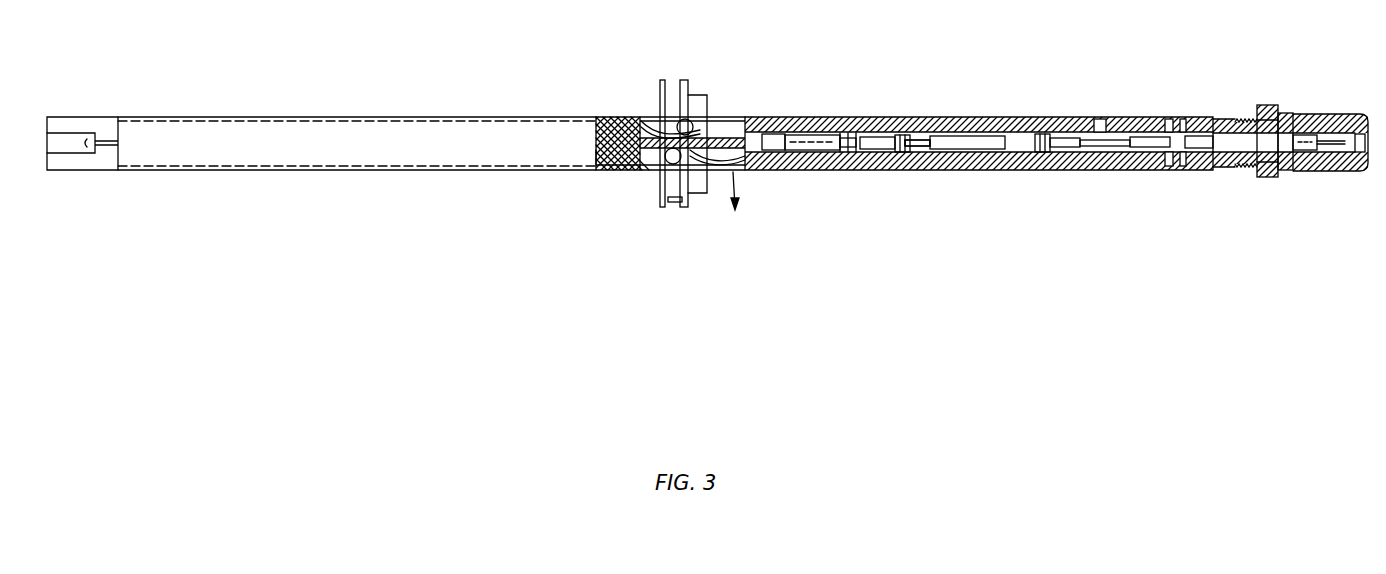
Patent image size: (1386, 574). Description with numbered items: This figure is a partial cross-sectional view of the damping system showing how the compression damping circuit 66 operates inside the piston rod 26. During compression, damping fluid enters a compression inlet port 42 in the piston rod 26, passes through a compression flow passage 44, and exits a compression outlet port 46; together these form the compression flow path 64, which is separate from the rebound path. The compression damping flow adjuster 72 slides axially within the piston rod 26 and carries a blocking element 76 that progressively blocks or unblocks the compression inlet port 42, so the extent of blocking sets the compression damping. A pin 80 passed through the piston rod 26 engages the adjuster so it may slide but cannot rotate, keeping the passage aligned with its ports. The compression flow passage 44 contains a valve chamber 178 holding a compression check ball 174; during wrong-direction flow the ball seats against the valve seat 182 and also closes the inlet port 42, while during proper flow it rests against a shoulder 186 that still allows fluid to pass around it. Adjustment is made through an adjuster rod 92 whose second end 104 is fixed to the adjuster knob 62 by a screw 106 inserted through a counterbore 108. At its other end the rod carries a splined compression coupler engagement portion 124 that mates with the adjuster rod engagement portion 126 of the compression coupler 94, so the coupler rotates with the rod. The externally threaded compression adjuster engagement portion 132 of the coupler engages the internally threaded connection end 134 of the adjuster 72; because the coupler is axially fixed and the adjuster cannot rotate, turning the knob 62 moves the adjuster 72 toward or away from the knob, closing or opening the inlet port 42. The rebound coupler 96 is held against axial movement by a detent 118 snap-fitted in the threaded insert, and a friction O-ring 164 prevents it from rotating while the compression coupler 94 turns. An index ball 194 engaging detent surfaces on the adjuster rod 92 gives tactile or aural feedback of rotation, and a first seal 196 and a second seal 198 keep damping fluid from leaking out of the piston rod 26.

The piston rod 26 is at (307, 117).
The compression inlet port 42 is at (640, 172).
The compression flow passage 44 is at (652, 170).
The compression outlet port 46 is at (735, 176).
The adjuster knob 62 is at (1324, 117).
The compression flow path 64 is at (623, 181).
The compression damping circuit 66 is at (592, 155).
The compression damping flow adjuster 72 is at (603, 170).
The blocking element 76 is at (583, 124).
The pin 80 is at (676, 200).
The adjuster rod 92 is at (1008, 170).
The compression coupler 94 is at (822, 170).
The rebound coupler 96 is at (897, 140).
The second end 104 is at (1302, 117).
The screw 106 is at (1342, 170).
The counterbore 108 is at (1308, 170).
The detent 118 is at (1099, 117).
The compression coupler engagement portion 124 is at (902, 170).
The adjuster rod engagement portion 126 is at (902, 170).
The compression adjuster engagement portion 132 is at (803, 133).
The connection end 134 is at (773, 135).
The friction O-ring 164 is at (908, 170).
The compression check ball 174 is at (682, 120).
The valve chamber 178 is at (661, 120).
The valve seat 182 is at (632, 128).
The shoulder 186 is at (682, 202).
The index ball 194 is at (1185, 117).
The first seal 196 is at (1167, 117).
The second seal 198 is at (1213, 170).